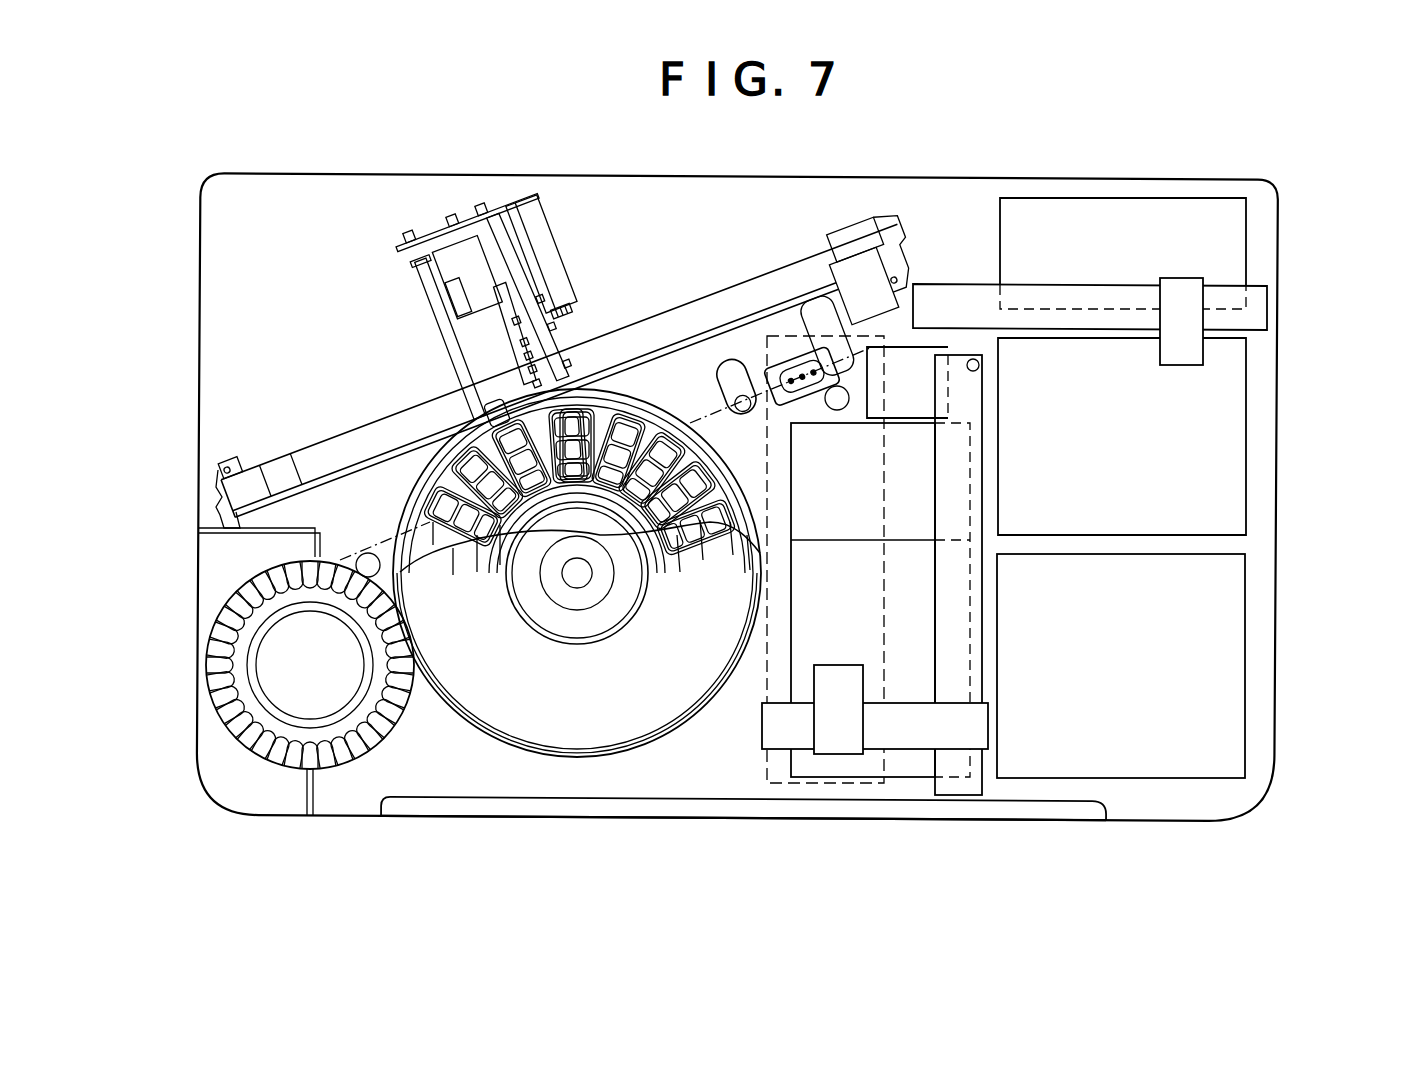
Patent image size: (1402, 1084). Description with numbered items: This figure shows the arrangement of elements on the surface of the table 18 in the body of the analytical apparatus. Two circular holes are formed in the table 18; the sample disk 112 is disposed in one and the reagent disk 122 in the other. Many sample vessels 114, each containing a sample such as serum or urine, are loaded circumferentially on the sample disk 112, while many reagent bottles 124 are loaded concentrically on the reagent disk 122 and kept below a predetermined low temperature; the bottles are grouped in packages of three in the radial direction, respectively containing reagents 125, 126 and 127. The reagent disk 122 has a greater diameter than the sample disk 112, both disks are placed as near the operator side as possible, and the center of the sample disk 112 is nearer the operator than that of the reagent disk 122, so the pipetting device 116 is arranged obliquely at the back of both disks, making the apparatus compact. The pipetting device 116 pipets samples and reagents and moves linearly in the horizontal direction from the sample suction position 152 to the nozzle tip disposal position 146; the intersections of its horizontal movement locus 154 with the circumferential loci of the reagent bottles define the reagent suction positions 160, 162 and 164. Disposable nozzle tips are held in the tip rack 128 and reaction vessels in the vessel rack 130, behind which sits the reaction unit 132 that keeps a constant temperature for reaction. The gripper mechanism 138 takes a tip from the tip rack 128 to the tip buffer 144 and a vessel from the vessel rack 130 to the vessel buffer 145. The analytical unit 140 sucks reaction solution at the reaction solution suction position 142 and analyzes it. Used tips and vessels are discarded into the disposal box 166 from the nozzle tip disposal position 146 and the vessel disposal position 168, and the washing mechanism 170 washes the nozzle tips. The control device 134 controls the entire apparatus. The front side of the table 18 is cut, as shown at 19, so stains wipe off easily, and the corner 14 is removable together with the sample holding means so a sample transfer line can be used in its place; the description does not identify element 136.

The corner 14 is at (225, 790).
The table 18 is at (607, 790).
The cut front side of the table 19 is at (693, 813).
The sample disk 112 is at (290, 762).
The sample vessels 114 is at (240, 585).
The pipetting device 116 is at (855, 235).
The reagent disk 122 is at (522, 724).
The reagent bottles 124 is at (766, 478).
The reagent 125 is at (455, 435).
The reagent 126 is at (606, 412).
The reagent 127 is at (617, 425).
The tip rack 128 is at (910, 765).
The vessel rack 130 is at (923, 490).
The reaction unit (incubator) 132 is at (927, 397).
The control device 134 is at (1232, 720).
The upper housing compartment 136 is at (1232, 472).
The gripper mechanism 138 is at (826, 752).
The analytical unit 140 is at (1190, 320).
The reaction solution suction position 142 is at (980, 365).
The tip buffer 144 is at (791, 273).
The vessel buffer 145 is at (793, 267).
The nozzle tip disposal position 146 is at (793, 304).
The sample suction position 152 is at (178, 547).
The horizontal movement locus 154 is at (373, 550).
The suction position 160 is at (555, 340).
The suction position 162 is at (593, 415).
The suction position 164 is at (650, 420).
The disposal box 166 is at (833, 745).
The vessel disposal position 168 is at (825, 402).
The washing mechanism 170 is at (730, 322).